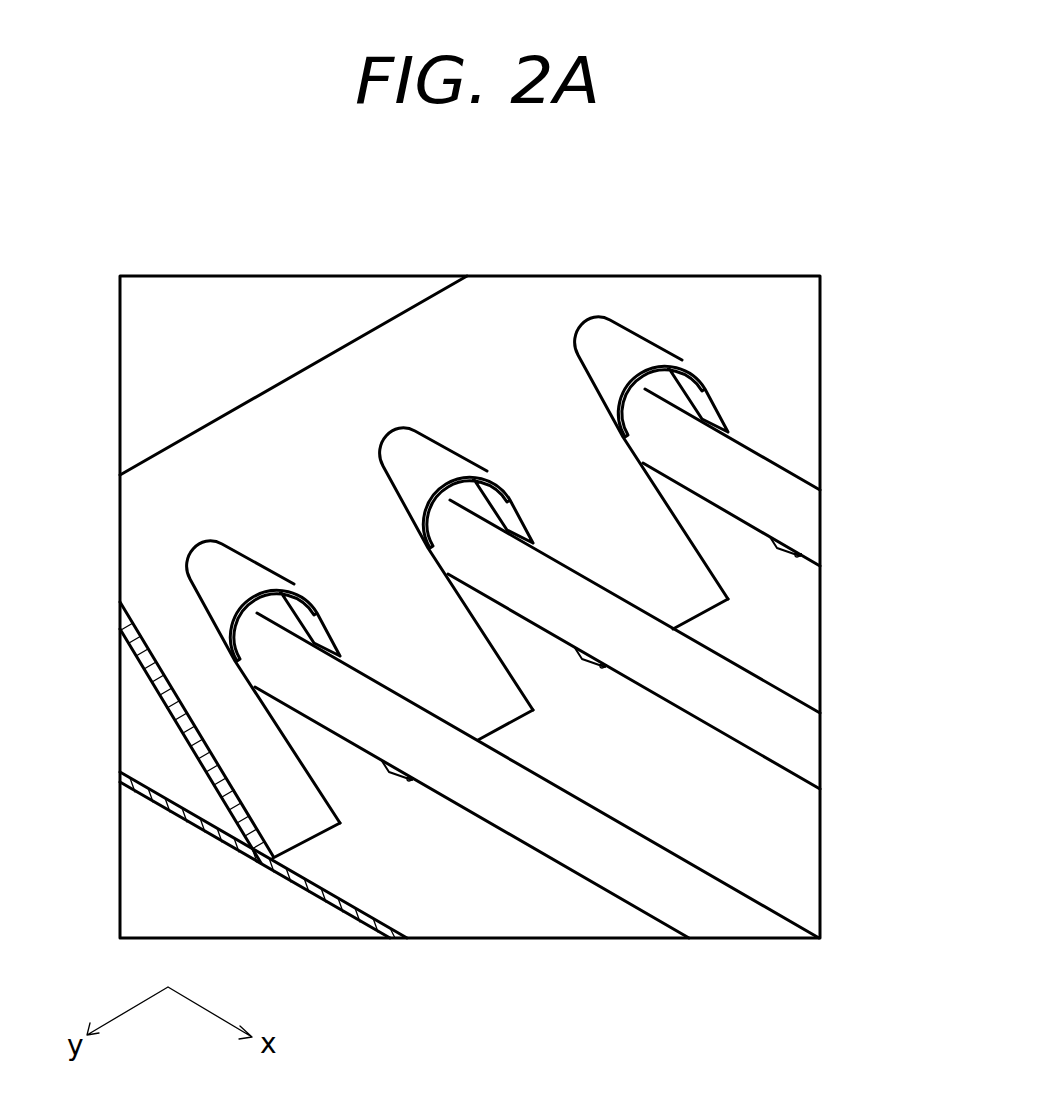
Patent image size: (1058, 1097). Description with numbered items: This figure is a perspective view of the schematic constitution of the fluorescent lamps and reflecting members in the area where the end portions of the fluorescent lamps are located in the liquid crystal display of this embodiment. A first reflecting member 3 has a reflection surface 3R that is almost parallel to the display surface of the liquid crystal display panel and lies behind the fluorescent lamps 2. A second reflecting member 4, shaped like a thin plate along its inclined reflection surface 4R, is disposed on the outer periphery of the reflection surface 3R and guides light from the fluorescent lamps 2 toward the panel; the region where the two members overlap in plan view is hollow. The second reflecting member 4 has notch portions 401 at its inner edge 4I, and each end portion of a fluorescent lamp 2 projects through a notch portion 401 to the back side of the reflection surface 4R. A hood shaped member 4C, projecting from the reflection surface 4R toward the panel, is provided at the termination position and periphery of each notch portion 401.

The fluorescent lamp 2 is at (762, 484).
The first reflecting member 3 is at (170, 817).
The reflection surface 3R is at (767, 829).
The second reflecting member 4 is at (167, 702).
The reflection surface 4R is at (528, 405).
The hood shaped member 4C is at (420, 448).
The inner edge 4I is at (329, 847).
The notch portion 401 is at (732, 409).